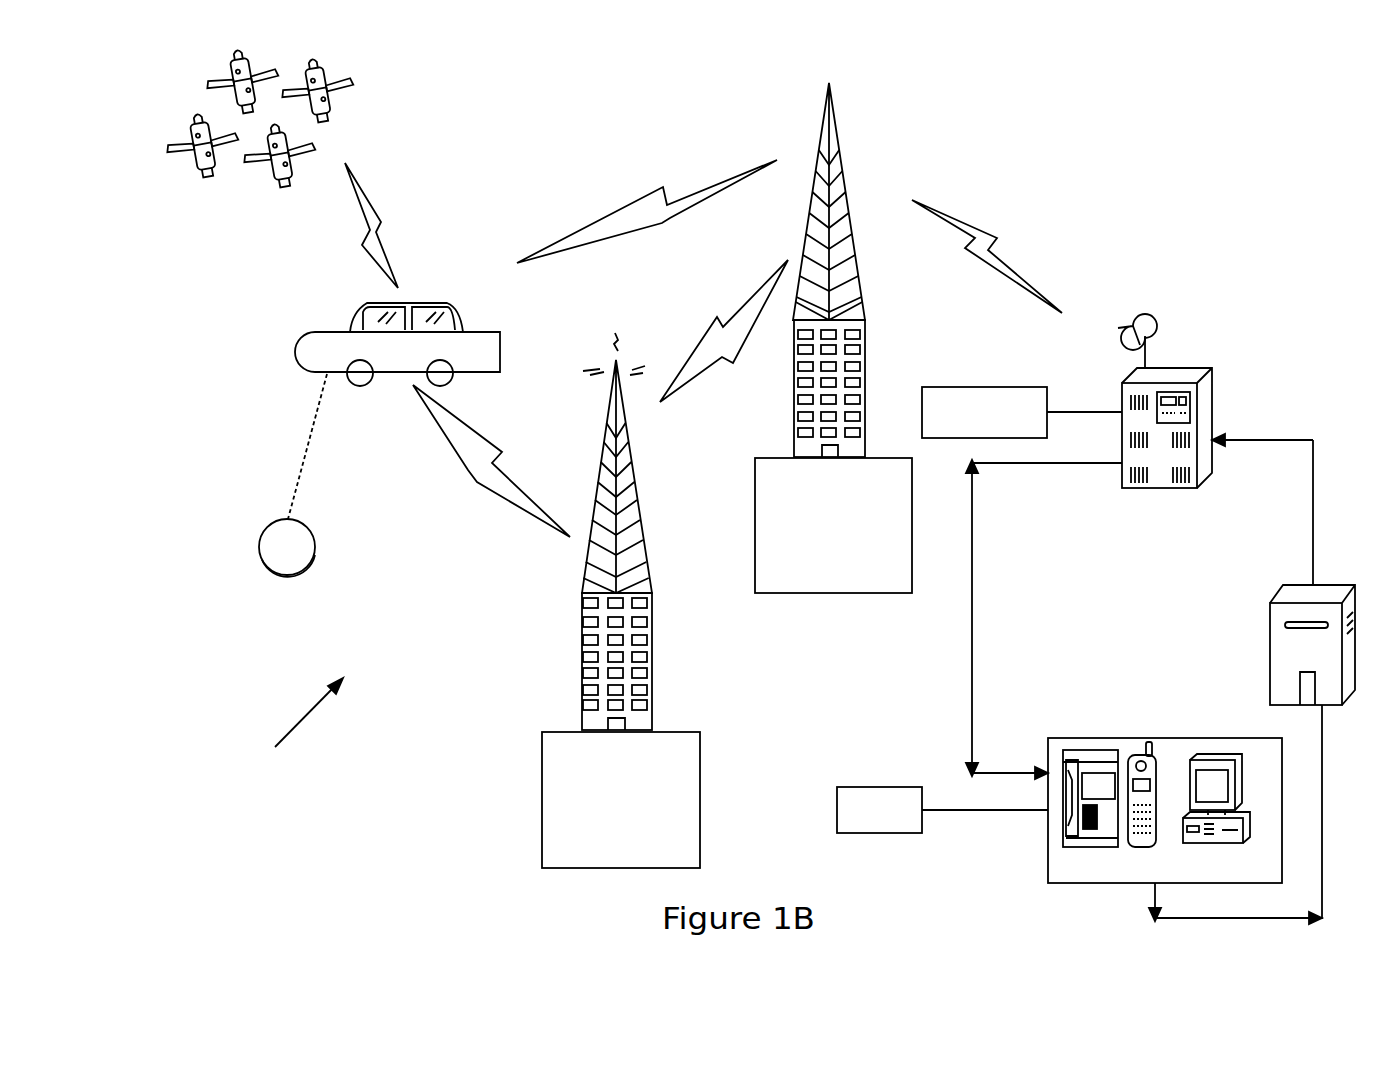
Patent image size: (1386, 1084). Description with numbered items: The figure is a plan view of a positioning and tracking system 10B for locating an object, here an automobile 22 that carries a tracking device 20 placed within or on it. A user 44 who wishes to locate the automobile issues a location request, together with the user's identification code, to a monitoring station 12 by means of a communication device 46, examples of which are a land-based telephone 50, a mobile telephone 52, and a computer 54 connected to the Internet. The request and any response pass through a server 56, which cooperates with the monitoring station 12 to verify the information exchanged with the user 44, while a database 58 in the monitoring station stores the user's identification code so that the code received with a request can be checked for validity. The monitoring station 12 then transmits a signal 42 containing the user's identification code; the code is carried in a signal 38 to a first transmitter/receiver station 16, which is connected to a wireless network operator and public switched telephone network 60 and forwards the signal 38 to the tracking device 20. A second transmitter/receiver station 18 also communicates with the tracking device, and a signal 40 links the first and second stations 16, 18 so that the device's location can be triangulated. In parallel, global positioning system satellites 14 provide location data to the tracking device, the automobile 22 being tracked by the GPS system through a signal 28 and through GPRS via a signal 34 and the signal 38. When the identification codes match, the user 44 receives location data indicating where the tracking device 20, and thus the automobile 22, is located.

The positioning and tracking system 10B is at (282, 723).
The monitoring station 12 is at (1190, 401).
The global positioning system (GPS) satellites 14 is at (239, 154).
The first transmitter/receiver station 16 is at (840, 270).
The second transmitter/receiver station 18 is at (643, 531).
The tracking device 20 is at (261, 486).
The automobile 22 is at (368, 349).
The signal 28 is at (390, 225).
The signal 34 is at (491, 461).
The signal 38 is at (647, 207).
The signal 40 is at (724, 331).
The signal 42 is at (987, 246).
The user 44 is at (855, 818).
The communication device 46 is at (1173, 810).
The land-based telephone 50 is at (1085, 772).
The mobile telephone 52 is at (1158, 772).
The computer 54 is at (1222, 770).
The server 56 is at (1288, 645).
The database 58 is at (984, 394).
The wireless network operator and public switched telephone network (PSTN) 60 is at (697, 663).